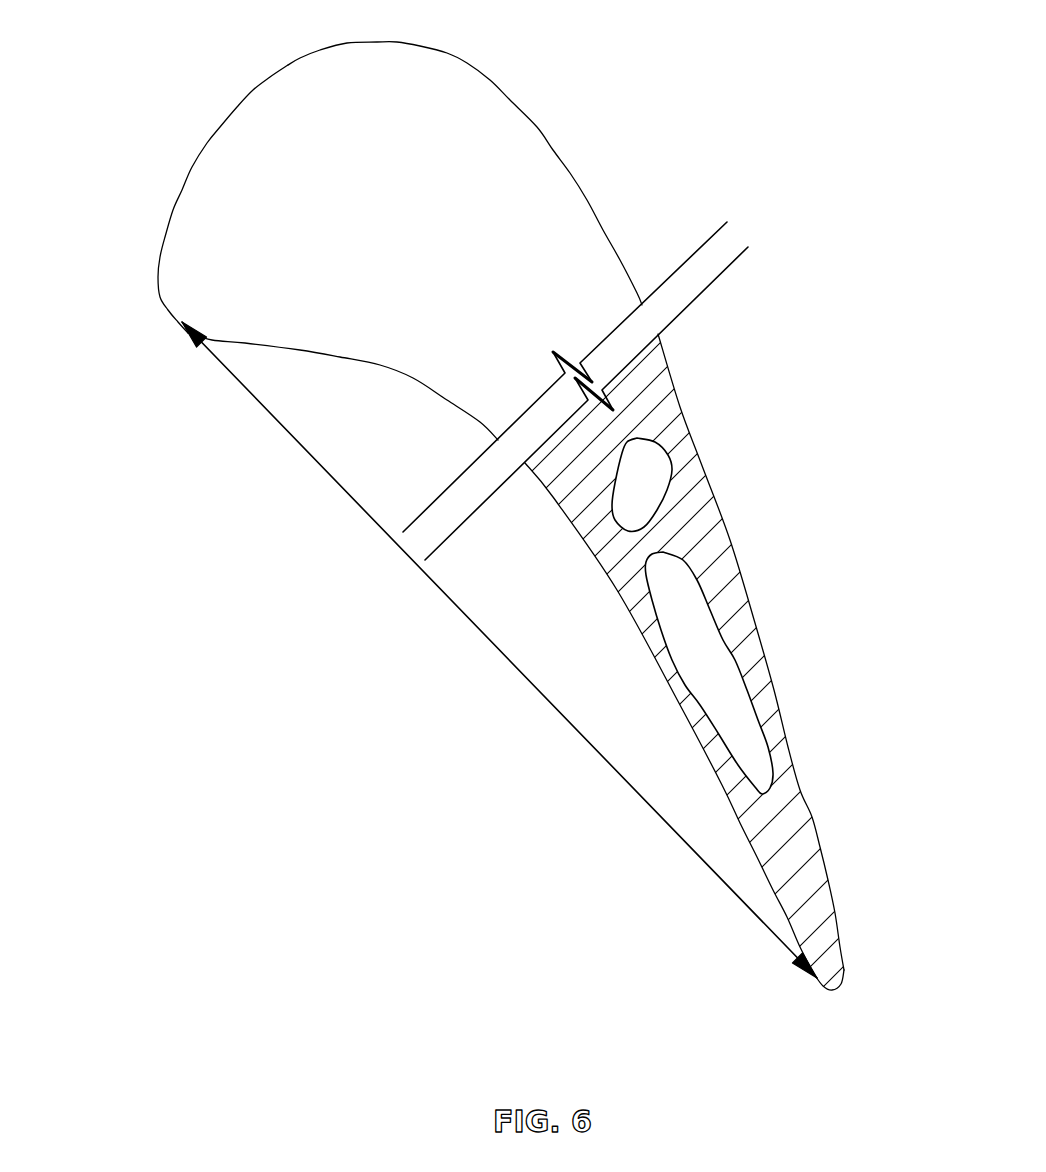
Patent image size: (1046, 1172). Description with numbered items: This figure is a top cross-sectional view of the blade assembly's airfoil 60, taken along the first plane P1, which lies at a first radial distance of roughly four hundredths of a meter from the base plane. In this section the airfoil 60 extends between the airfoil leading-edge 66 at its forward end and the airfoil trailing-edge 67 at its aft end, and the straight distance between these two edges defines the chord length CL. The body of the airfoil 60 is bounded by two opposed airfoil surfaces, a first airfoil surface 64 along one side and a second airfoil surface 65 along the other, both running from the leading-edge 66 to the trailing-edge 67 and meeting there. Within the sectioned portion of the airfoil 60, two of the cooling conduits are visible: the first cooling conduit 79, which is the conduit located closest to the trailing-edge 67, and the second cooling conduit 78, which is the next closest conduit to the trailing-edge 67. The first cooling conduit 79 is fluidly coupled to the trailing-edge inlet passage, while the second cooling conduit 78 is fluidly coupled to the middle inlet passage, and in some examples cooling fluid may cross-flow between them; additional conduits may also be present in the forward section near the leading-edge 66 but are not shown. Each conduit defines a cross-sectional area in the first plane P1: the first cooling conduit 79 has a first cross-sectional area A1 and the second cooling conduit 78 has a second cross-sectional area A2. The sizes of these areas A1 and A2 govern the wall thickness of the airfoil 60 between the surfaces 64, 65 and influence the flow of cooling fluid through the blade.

The airfoil 60 is at (157, 143).
The pressure side 64 is at (563, 513).
The suction side 65 is at (572, 174).
The airfoil leading-edge 66 is at (168, 310).
The airfoil trailing-edge 67 is at (832, 990).
The second cooling conduit 78 is at (647, 477).
The first cooling conduit 79 is at (728, 708).
The first cross-sectional area A1 is at (682, 597).
The second cross-sectional area A2 is at (626, 498).
The chord length CL is at (507, 660).
The first plane P1 is at (960, 167).